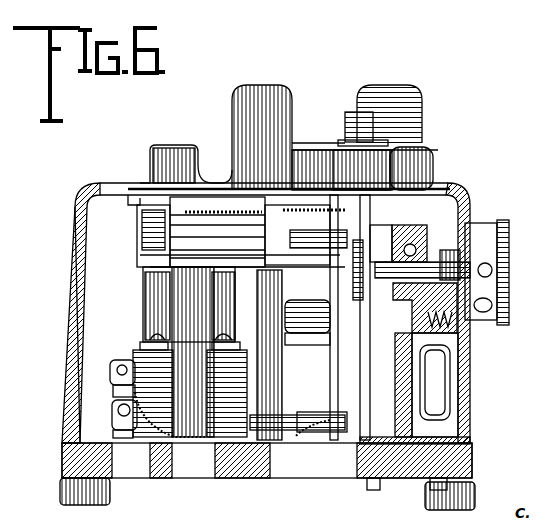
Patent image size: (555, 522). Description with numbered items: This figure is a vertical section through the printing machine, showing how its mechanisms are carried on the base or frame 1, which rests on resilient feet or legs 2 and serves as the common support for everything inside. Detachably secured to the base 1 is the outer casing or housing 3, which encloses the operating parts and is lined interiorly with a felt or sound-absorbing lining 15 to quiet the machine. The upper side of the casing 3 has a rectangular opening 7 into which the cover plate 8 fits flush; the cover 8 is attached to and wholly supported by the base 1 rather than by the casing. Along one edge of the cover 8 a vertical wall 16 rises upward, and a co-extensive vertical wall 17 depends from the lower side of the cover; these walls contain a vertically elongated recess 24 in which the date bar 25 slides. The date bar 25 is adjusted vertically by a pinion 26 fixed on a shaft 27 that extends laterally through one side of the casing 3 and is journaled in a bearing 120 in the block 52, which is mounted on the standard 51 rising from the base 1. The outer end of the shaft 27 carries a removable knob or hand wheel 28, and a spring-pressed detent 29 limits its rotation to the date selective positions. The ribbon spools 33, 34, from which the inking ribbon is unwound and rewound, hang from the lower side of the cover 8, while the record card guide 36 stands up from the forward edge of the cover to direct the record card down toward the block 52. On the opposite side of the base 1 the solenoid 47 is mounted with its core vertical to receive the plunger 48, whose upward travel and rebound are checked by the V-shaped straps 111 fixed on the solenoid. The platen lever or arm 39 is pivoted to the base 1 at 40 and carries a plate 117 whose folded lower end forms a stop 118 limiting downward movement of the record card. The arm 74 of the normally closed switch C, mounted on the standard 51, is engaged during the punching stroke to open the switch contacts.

The base or frame 1 is at (243, 472).
The resilient feet or legs 2 is at (110, 490).
The outer casing or housing 3 is at (70, 332).
The rectangular opening 7 is at (129, 205).
The cover plate 8 is at (130, 183).
The lining of felt or sound-absorbing material 15 is at (85, 237).
The vertical wall 16 is at (243, 142).
The vertical wall 17 is at (410, 185).
The vertically elongated recess 24 is at (420, 170).
The date bar 25 is at (352, 140).
The pinion 26 is at (365, 310).
The shaft 27 is at (445, 262).
The knob or hand wheel 28 is at (509, 238).
The spring-pressed detent 29 is at (462, 322).
The ribbon spool 33 is at (142, 265).
The ribbon spool 34 is at (247, 344).
The record card guide 36 is at (268, 100).
The lever or arm 39 is at (310, 375).
The pivot 40 is at (318, 420).
The solenoid 47 is at (152, 362).
The plunger 48 is at (175, 284).
The standard 51 is at (405, 385).
The block 52 is at (405, 238).
The arm 74 is at (485, 298).
The straps 111 is at (148, 302).
The plate 117 is at (307, 309).
The stop 118 is at (330, 338).
The bearing 120 is at (425, 210).